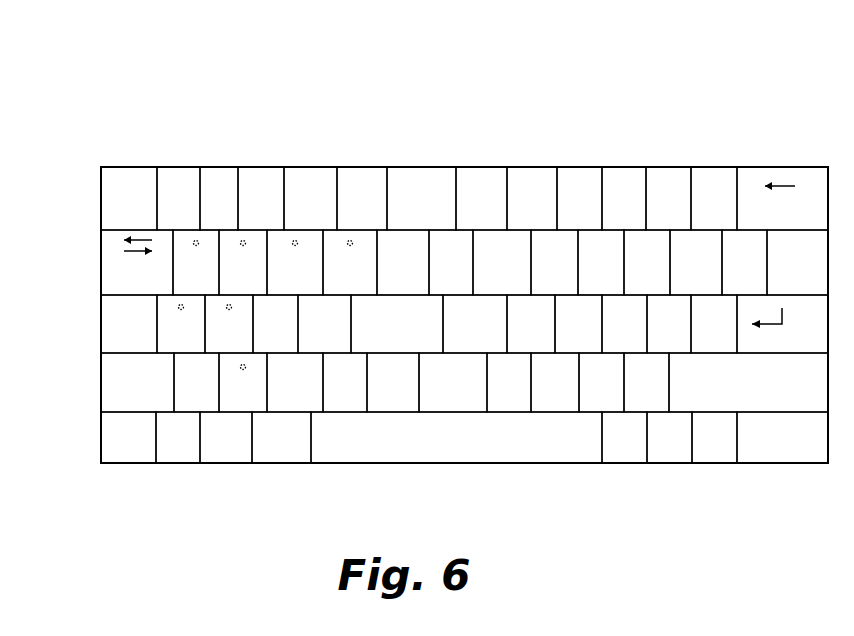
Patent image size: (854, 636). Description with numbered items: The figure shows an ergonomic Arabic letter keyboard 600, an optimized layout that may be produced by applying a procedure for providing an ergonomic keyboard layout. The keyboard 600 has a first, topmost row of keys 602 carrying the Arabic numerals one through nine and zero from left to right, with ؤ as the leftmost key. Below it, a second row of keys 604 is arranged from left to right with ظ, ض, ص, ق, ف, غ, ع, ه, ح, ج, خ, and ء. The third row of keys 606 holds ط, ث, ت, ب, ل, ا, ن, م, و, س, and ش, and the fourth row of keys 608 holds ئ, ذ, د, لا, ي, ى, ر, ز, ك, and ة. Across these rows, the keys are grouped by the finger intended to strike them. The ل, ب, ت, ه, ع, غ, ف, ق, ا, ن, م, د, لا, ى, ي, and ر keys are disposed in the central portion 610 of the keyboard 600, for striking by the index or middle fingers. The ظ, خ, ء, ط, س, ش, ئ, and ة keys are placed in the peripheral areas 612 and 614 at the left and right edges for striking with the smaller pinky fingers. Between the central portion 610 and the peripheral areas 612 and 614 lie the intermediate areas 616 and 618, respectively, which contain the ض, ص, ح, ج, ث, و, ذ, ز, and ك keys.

The ergonomic Arabic letter keyboard 600 is at (419, 36).
The first row of keys 602 is at (431, 169).
The second row of keys 604 is at (431, 262).
The third row of keys 606 is at (431, 324).
The fourth row of keys 608 is at (431, 382).
The central portion 610 is at (557, 144).
The peripheral area 612 is at (175, 146).
The peripheral area 614 is at (664, 146).
The intermediate area 616 is at (236, 146).
The intermediate area 618 is at (642, 146).